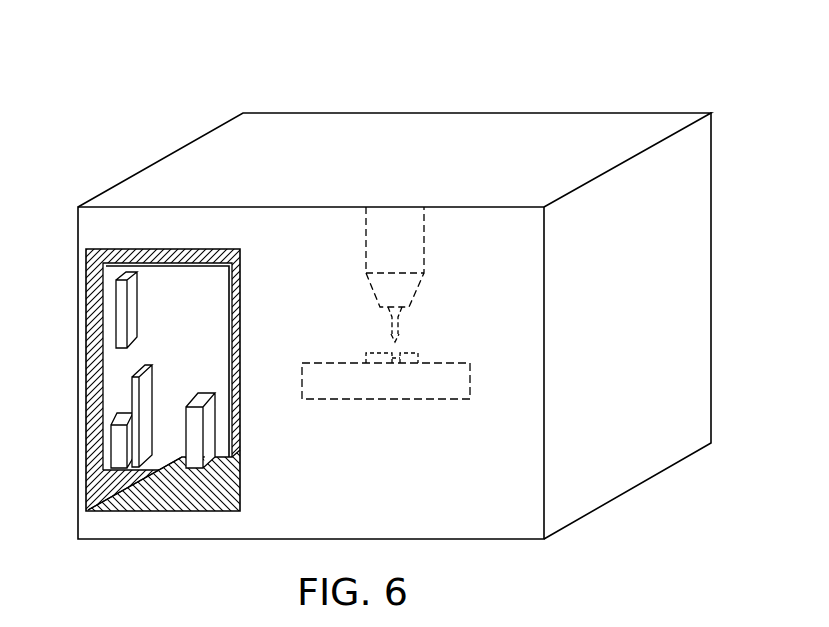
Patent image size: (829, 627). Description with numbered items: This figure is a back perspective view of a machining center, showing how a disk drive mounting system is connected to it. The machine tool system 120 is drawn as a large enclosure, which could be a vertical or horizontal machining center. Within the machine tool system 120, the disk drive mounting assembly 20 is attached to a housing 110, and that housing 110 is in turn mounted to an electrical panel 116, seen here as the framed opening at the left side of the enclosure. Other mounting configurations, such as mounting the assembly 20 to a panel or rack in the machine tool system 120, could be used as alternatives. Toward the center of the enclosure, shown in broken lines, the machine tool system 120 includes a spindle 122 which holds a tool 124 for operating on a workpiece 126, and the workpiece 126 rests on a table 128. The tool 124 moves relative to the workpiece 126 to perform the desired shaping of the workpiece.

The machine tool system 120 is at (606, 96).
The electrical panel 116 is at (188, 278).
The housing 110 is at (145, 368).
The disk drive mounting assembly 20 is at (105, 472).
The spindle 122 is at (418, 240).
The tool 124 is at (391, 328).
The workpiece 126 is at (420, 358).
The table 128 is at (426, 400).